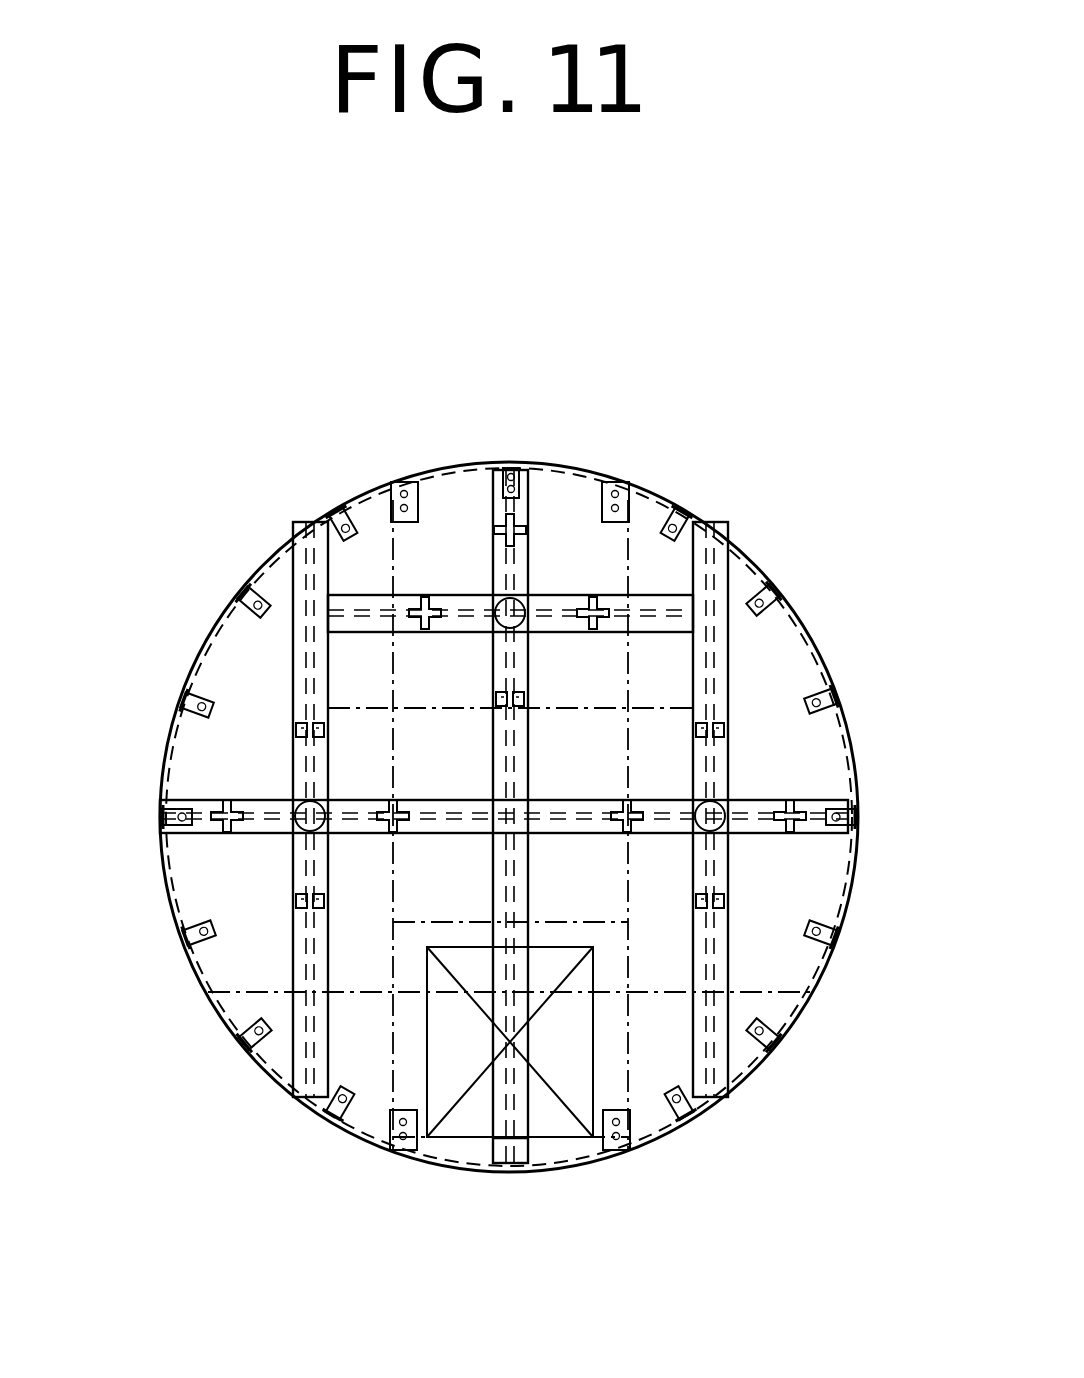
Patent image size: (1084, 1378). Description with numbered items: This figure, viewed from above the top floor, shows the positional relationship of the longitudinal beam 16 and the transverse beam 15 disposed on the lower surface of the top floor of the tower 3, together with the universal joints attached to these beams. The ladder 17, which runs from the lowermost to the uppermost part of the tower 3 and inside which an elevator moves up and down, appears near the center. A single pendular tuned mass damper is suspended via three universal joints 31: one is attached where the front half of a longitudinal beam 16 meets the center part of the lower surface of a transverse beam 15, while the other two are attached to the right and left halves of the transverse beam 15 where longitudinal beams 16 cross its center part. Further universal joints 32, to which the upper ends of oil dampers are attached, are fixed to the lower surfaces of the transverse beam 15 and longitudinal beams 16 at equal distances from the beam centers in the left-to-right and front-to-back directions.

The tower 3 is at (495, 478).
The transverse beam 15 is at (362, 634).
The longitudinal beam 16 is at (492, 553).
The ladder 17 is at (555, 1170).
The universal joint 31 is at (532, 590).
The second universal joint 32 is at (530, 525).